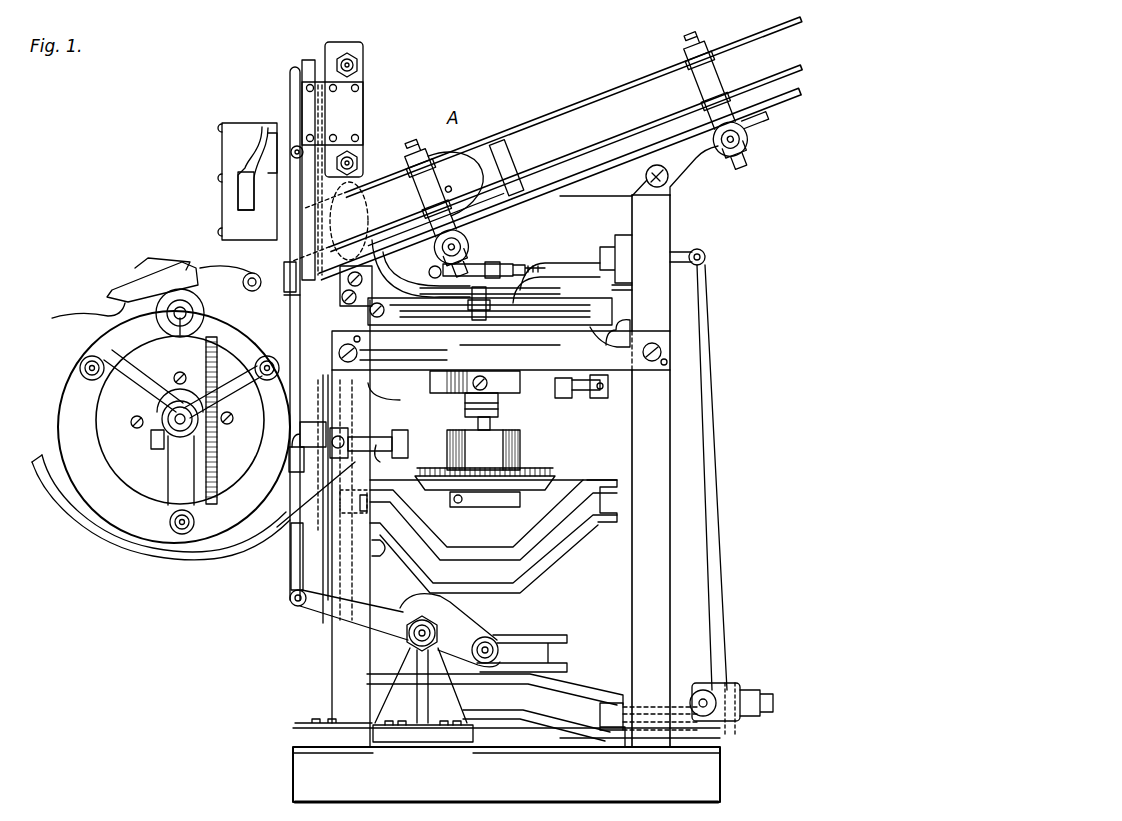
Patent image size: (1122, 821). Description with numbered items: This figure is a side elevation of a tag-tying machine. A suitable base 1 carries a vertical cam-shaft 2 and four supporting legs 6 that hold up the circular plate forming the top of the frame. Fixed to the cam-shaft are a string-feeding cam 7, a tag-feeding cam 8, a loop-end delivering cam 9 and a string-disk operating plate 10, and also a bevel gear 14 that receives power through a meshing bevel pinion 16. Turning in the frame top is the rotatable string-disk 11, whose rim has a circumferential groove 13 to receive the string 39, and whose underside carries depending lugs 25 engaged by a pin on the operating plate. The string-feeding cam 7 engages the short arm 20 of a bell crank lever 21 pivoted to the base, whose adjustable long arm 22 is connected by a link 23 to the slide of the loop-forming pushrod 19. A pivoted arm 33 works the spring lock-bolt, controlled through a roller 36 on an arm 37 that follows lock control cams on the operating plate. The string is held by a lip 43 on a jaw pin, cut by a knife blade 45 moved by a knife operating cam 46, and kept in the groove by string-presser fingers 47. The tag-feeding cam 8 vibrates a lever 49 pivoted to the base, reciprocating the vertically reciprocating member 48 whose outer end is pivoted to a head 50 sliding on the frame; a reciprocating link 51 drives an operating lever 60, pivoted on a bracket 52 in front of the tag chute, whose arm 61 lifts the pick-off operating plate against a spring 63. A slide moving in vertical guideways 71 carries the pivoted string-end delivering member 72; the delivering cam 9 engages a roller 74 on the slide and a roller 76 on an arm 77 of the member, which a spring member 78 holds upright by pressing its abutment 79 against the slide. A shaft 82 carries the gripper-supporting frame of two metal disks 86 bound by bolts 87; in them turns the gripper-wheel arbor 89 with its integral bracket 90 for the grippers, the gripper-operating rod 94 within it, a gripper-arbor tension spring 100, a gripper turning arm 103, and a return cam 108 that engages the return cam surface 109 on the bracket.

The base 1 is at (498, 784).
The vertical cam-shaft 2 is at (483, 450).
The supporting legs 6 is at (655, 562).
The string-feeding cam 7 is at (495, 707).
The tag-feeding cam 8 is at (540, 652).
The loop-end delivering cam 9 is at (618, 500).
The string-disk operating plate 10 is at (395, 582).
The rotatable string-disk 11 is at (567, 290).
The circumferential groove 13 is at (447, 350).
The bevel gear 14 is at (550, 476).
The bevel pinion 16 is at (520, 440).
The loop-forming pushrod 19 is at (305, 333).
The short arm 20 is at (622, 702).
The bell crank lever 21 is at (735, 684).
The long arm 22 is at (714, 497).
The link 23 is at (540, 270).
The depending lugs 25 is at (438, 507).
The arm 33 is at (634, 345).
The roller 36 is at (562, 398).
The arm 37 is at (598, 398).
The string 39 is at (337, 248).
The lip 43 is at (490, 300).
The knife blade 45 is at (470, 282).
The knife operating cam 46 is at (498, 405).
The string-presser fingers 47 is at (380, 300).
The vertically reciprocating member 48 is at (310, 403).
The lever 49 is at (383, 620).
The head 50 is at (290, 262).
The reciprocating link 51 is at (288, 302).
The bracket 52 is at (275, 262).
The operating lever 60 is at (250, 158).
The arm 61 is at (238, 196).
The spring 63 is at (114, 292).
The vertical guideways 71 is at (322, 628).
The string-end delivering member 72 is at (368, 381).
The roller 74 is at (367, 502).
The roller 76 is at (400, 438).
The arm 77 is at (390, 462).
The spring member 78 is at (298, 437).
The abutment 79 is at (305, 506).
The shaft 82 is at (180, 422).
The metal disks 86 is at (83, 452).
The bolts 87 is at (84, 366).
The gripper-wheel arbor 89 is at (178, 330).
The bracket 90 is at (115, 313).
The gripper-operating rod 94 is at (172, 316).
The gripper-arbor tension spring 100 is at (218, 465).
The gripper turning arm 103 is at (262, 258).
The return cam 108 is at (142, 268).
The return cam surface 109 is at (215, 540).